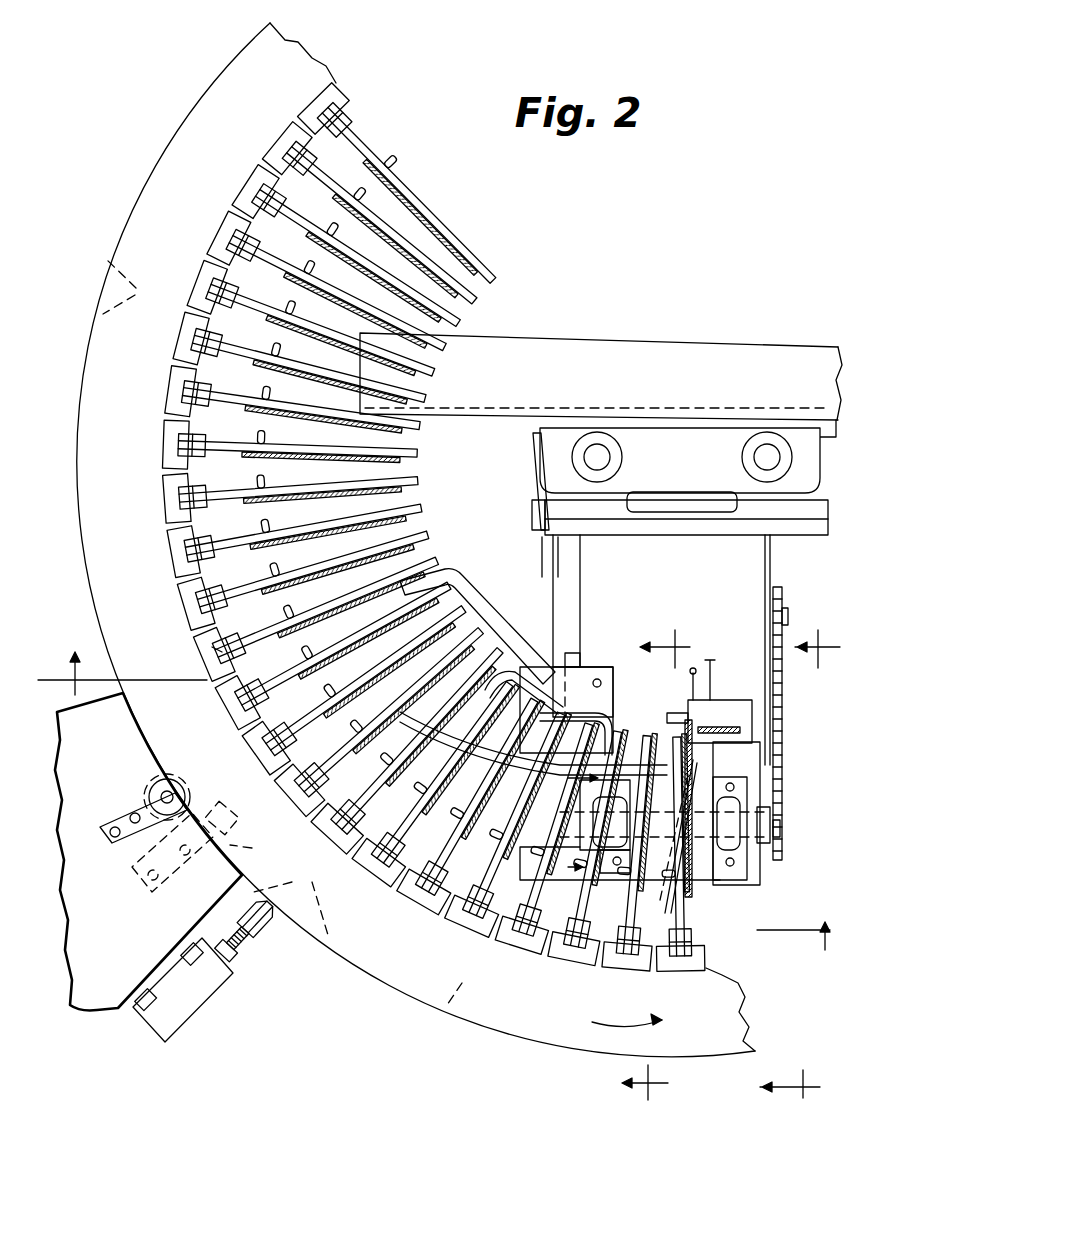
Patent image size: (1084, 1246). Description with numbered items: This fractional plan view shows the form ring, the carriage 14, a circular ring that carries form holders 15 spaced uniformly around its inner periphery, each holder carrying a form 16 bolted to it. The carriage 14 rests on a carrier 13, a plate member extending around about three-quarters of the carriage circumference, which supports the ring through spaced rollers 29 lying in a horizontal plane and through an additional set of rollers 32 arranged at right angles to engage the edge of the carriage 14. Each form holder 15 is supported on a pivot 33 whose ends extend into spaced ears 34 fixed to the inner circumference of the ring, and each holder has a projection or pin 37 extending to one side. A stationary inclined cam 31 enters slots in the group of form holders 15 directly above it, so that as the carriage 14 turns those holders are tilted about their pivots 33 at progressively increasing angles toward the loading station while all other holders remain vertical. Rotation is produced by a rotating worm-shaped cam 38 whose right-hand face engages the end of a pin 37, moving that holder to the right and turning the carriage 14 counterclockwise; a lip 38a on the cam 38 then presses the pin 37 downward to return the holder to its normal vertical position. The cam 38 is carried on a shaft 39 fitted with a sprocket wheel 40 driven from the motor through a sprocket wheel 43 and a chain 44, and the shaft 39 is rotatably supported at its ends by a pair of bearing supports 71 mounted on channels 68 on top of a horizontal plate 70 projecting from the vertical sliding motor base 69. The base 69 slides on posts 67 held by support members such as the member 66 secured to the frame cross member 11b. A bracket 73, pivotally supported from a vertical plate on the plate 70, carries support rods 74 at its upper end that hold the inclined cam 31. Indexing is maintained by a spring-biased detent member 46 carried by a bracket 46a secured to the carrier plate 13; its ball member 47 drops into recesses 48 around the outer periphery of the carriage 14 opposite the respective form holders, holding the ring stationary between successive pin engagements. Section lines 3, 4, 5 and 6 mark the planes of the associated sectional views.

The cross member 11b is at (605, 357).
The carrier plate 13 is at (100, 1000).
The carriage 14 is at (425, 985).
The form holder 15 is at (444, 232).
The form 16 is at (472, 282).
The rollers 29 is at (218, 800).
The inclined cam 31 is at (447, 576).
The rollers 32 is at (150, 790).
The pivot 33 is at (203, 448).
The ears 34 is at (207, 662).
The pin 37 is at (383, 160).
The rotating cam 38 is at (675, 905).
The lip 38a is at (692, 912).
The shaft 39 is at (782, 832).
The sprocket wheel 40 is at (770, 820).
The sprocket wheel 43 is at (773, 612).
The chain 44 is at (782, 770).
The spring-biased detent member 46 is at (255, 928).
The bracket 46a is at (207, 990).
The ball member 47 is at (272, 917).
The recesses 48 is at (291, 631).
The support member 66 is at (668, 432).
The posts 67 is at (752, 460).
The channels 68 is at (608, 876).
The vertical sliding base member 69 is at (808, 512).
The horizontal plate 70 is at (770, 566).
The bearing supports 71 is at (735, 808).
The bracket 73 is at (592, 668).
The support rods 74 is at (510, 672).
The section line 3- 3 is at (435, 787).
The section line 4- 4 is at (664, 865).
The section line 5- 5 is at (800, 866).
The section line 6- 6 is at (574, 822).